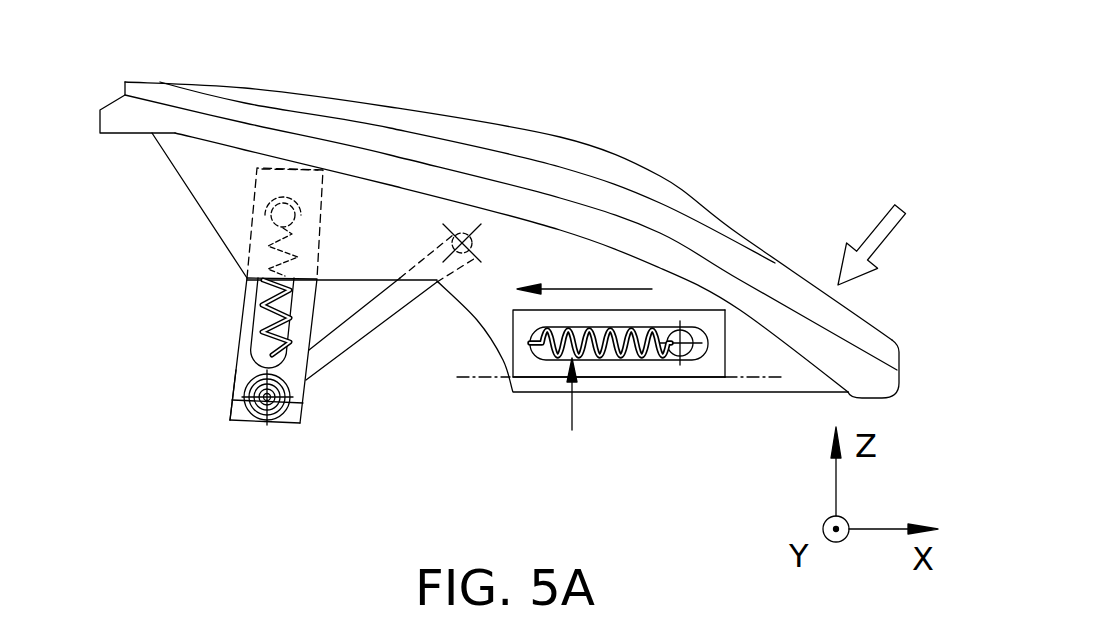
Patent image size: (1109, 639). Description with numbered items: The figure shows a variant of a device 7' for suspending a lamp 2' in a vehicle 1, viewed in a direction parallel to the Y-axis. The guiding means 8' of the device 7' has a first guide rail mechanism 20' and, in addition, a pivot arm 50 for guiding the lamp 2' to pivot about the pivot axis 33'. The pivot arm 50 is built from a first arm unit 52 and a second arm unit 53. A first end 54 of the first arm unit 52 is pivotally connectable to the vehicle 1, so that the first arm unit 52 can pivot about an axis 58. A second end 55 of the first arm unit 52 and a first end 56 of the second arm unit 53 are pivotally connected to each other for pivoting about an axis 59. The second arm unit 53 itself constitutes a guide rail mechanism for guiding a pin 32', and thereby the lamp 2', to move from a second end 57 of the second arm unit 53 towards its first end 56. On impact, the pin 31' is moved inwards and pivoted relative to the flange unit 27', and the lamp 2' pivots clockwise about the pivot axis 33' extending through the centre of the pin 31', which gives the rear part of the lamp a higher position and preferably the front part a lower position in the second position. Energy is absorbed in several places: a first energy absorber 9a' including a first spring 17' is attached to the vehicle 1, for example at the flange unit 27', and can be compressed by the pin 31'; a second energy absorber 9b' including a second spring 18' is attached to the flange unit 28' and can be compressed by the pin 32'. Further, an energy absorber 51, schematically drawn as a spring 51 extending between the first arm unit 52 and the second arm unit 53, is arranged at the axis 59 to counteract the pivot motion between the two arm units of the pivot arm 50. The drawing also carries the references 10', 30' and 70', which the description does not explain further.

The vehicle lamp suspension device 7' is at (500, 196).
The lamp 2' is at (499, 240).
The actuation direction 10' is at (617, 199).
The first guide rail mechanism 20' is at (511, 232).
The pivot axis 33' is at (710, 250).
The pin 31' is at (766, 269).
The flange unit 27' is at (639, 390).
The first spring 17' is at (619, 398).
The guiding means 8' is at (407, 399).
The first energy absorber 9a' is at (563, 434).
The second energy absorber 9b' is at (167, 288).
The spring element 30' is at (213, 317).
The second spring 18' is at (217, 303).
The second arm unit 53 is at (252, 225).
The pin 32' is at (364, 165).
The second end of the second arm unit 57 is at (296, 145).
The first end of the first arm unit 54 is at (466, 200).
The axis 58 is at (470, 245).
The energy absorber 51 is at (250, 380).
The first end of the second arm unit 56 is at (205, 415).
The second end of the first arm unit 55 is at (218, 450).
The flange unit 28' is at (262, 463).
The axis 59 is at (280, 424).
The first arm unit 52 is at (340, 340).
The pivot arm 50 is at (395, 355).
The vehicle 1 is at (472, 380).
The actuation force 70' is at (901, 245).